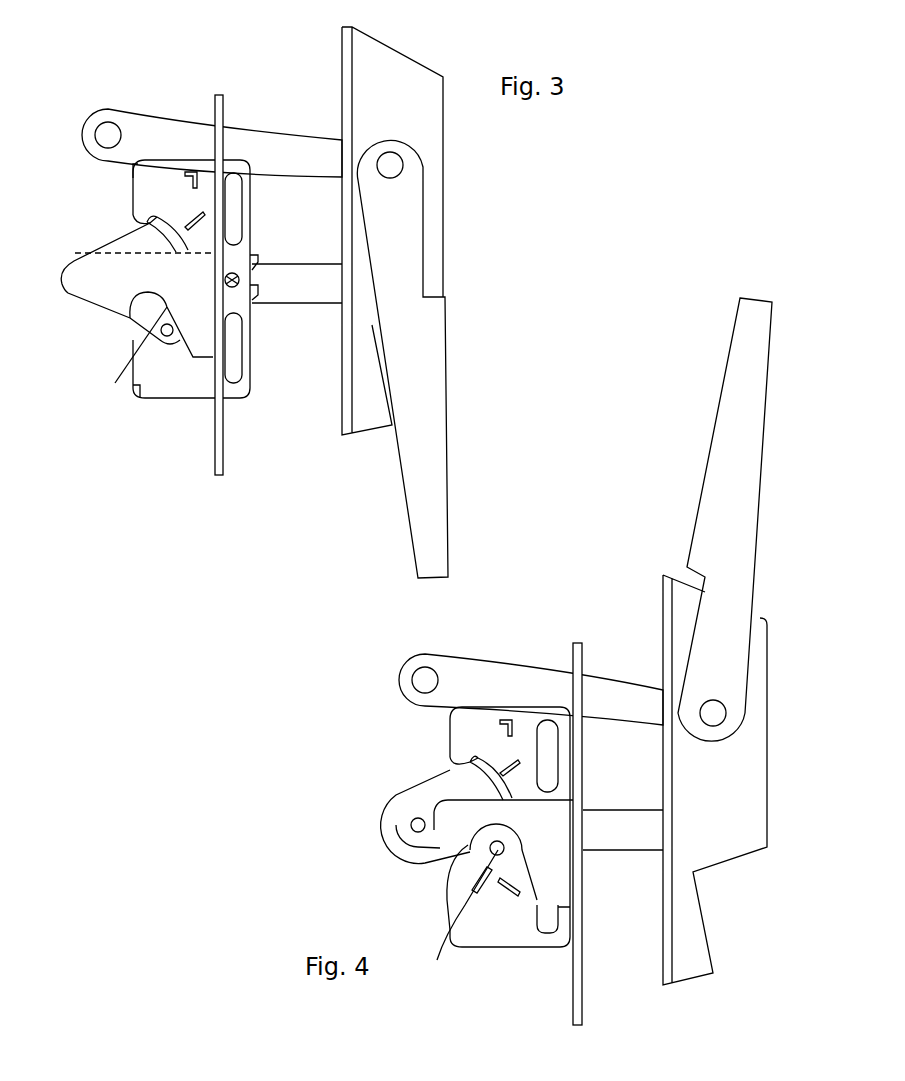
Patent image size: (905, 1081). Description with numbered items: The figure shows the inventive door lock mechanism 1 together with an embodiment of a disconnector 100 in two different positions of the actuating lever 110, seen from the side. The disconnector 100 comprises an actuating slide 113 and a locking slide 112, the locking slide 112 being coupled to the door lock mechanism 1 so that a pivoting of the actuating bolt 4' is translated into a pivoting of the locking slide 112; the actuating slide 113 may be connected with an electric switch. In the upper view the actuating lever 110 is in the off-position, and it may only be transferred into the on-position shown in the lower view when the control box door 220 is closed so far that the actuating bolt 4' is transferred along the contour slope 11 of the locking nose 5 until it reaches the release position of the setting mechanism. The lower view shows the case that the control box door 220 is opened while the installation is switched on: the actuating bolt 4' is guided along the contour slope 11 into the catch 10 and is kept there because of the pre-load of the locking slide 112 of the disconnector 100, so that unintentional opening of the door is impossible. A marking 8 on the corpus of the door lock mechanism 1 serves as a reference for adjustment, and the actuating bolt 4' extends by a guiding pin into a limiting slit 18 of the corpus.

In FIG. 3, the door lock mechanism 1 is at (153, 382).
In FIG. 4, the door lock mechanism 1 is at (492, 933).
In FIG. 3, the actuating bolt 4' is at (126, 355).
In FIG. 4, the actuating bolt 4' is at (456, 926).
In FIG. 3, the locking nose 5 is at (72, 270).
In FIG. 4, the locking nose 5 is at (423, 817).
In FIG. 4, the marking 8 is at (505, 870).
In FIG. 4, the catch 10 is at (497, 848).
In FIG. 3, the contour slope 11 is at (130, 337).
In FIG. 3, the limiting slit 18 is at (132, 222).
In FIG. 4, the limiting slit 18 is at (450, 760).
In FIG. 3, the disconnector 100 is at (438, 183).
In FIG. 4, the disconnector 100 is at (745, 812).
In FIG. 3, the actuating lever 110 is at (430, 483).
In FIG. 4, the actuating lever 110 is at (750, 437).
In FIG. 3, the locking slide 112 is at (302, 303).
In FIG. 4, the locking slide 112 is at (620, 838).
In FIG. 3, the actuating slide 113 is at (147, 125).
In FIG. 4, the actuating slide 113 is at (478, 677).
In FIG. 3, the control box door 220 is at (219, 477).
In FIG. 4, the control box door 220 is at (578, 1026).